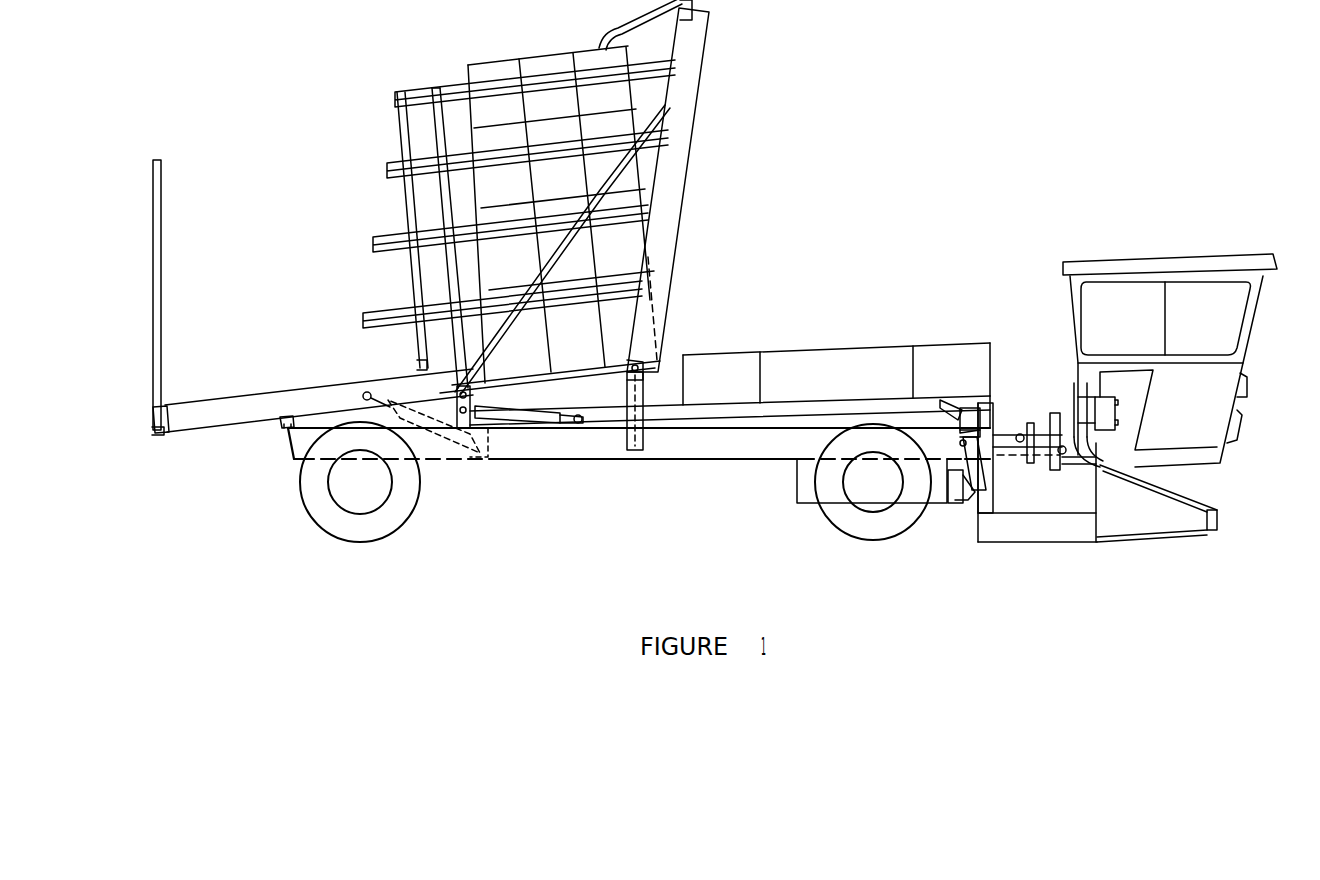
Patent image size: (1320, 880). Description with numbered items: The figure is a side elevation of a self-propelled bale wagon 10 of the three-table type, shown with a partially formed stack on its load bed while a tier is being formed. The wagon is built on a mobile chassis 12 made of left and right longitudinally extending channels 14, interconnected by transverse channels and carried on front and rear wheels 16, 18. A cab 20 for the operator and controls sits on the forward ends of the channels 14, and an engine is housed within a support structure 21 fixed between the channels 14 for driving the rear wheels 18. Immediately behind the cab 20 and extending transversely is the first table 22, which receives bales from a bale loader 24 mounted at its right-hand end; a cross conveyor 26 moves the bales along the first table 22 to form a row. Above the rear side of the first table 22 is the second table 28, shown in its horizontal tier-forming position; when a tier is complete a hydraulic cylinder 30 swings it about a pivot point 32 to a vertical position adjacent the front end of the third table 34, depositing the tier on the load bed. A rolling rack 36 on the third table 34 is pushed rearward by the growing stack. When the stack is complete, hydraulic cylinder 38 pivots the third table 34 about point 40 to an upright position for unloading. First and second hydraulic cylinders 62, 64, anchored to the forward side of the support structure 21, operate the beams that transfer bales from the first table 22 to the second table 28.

The bale wagon 10 is at (940, 208).
The mobile chassis 12 is at (710, 460).
The longitudinally extending channels 14 is at (561, 460).
The front wheels 16 is at (842, 534).
The rear wheels 18 is at (322, 532).
The cab 20 is at (1174, 258).
The support structure 21 is at (797, 479).
The first table 22 is at (1027, 405).
The bale loader 24 is at (1059, 533).
The cross conveyor 26 is at (1043, 430).
The second table 28 is at (850, 400).
The hydraulic cylinder 30 is at (523, 407).
The pivot point 32 is at (640, 360).
The third table 34 is at (301, 390).
The rolling rack 36 is at (405, 203).
The hydraulic cylinder 38 is at (451, 452).
The pivot point 40 is at (284, 426).
The first hydraulic cylinder 62 is at (978, 490).
The second hydraulic cylinder 64 is at (948, 498).